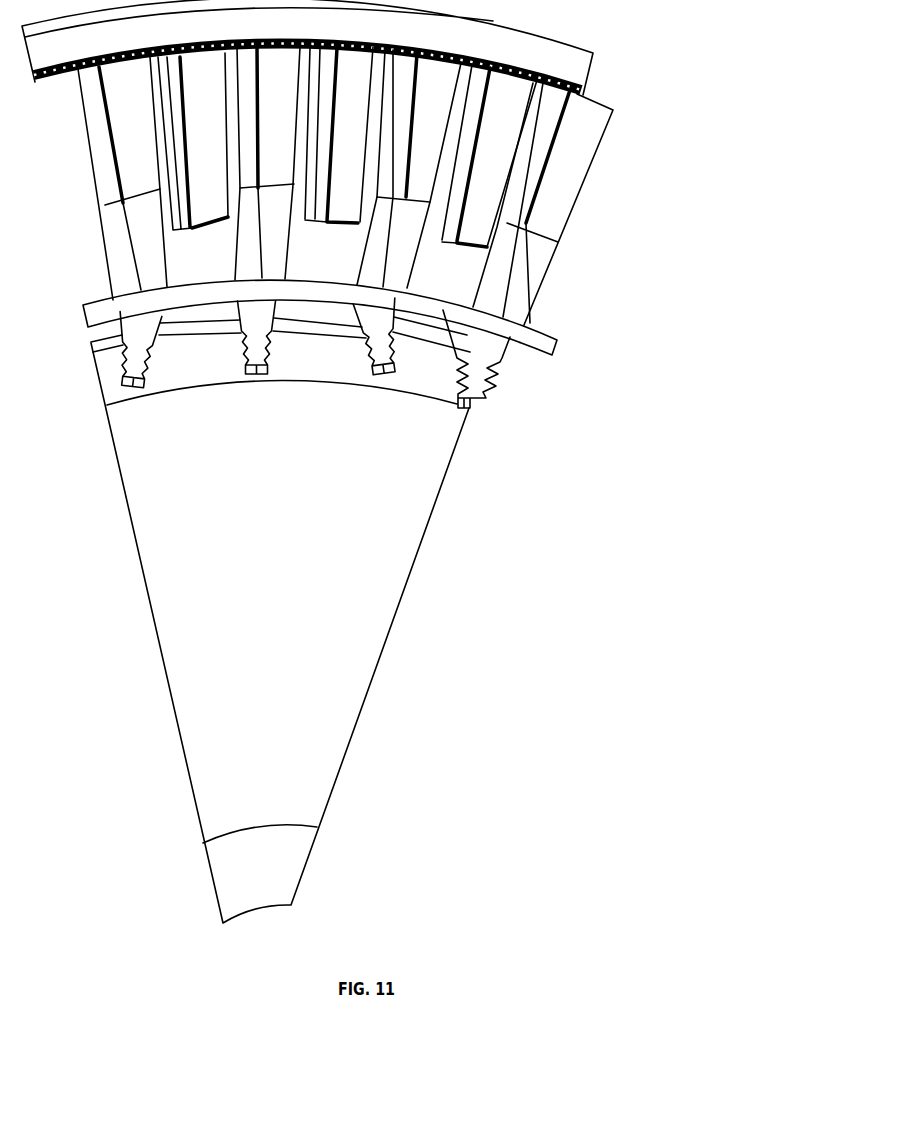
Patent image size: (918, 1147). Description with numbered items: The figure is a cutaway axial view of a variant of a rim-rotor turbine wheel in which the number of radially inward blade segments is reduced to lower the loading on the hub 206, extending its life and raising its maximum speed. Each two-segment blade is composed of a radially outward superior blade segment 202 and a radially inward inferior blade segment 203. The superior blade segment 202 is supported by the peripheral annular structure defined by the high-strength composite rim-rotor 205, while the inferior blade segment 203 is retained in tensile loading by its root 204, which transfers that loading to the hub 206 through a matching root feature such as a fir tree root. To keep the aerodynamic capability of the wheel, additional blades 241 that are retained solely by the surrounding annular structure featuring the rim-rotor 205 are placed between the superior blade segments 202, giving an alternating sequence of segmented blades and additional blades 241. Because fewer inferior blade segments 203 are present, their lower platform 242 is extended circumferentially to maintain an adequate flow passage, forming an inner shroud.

The rim-rotor 205 is at (560, 63).
The superior blade segment 202 is at (568, 148).
The additional blade 241 is at (493, 152).
The inferior blade segment 203 is at (527, 268).
The lower platform 242 is at (580, 317).
The root 204 is at (528, 352).
The hub 206 is at (365, 497).